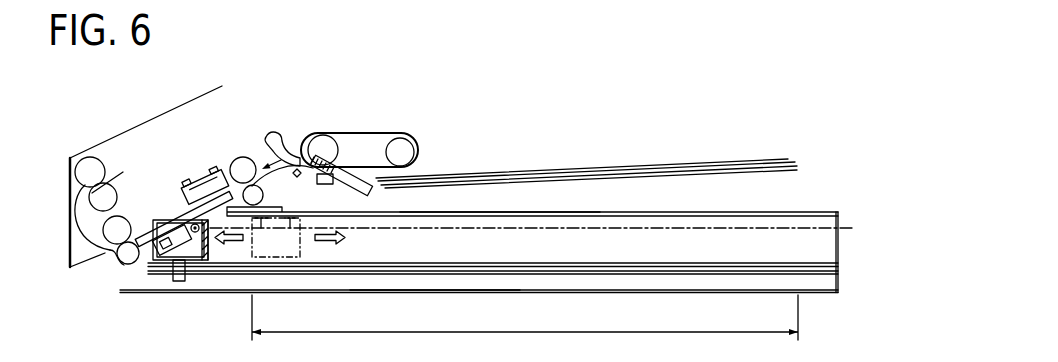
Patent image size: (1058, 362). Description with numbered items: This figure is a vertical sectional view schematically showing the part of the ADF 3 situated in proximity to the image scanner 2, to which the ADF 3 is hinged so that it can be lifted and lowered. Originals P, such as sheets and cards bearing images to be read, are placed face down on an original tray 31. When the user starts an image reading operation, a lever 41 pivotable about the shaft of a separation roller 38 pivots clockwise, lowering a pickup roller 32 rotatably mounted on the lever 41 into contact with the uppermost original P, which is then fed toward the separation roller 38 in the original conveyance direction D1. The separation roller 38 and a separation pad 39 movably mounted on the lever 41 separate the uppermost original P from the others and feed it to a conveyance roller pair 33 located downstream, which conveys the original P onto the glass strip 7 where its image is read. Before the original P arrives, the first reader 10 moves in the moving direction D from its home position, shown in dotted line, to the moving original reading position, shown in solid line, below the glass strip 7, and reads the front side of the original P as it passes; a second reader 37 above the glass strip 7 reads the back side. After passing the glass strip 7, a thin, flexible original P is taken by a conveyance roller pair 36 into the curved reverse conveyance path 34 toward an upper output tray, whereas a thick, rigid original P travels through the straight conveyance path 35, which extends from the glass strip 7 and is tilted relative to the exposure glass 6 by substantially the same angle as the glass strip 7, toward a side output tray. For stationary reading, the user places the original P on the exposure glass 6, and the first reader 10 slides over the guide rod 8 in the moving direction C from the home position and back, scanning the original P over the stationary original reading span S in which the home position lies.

The image scanner 2 is at (812, 195).
The ADF 3 is at (247, 92).
The exposure glass 6 is at (531, 211).
The glass strip 7 is at (165, 216).
The guide rod 8 is at (437, 274).
The first reader 10 is at (186, 281).
The original tray 31 is at (453, 181).
The pickup roller 32 is at (403, 142).
The conveyance roller pair 33 is at (264, 192).
The reverse conveyance path 34 is at (69, 173).
The straight conveyance path 35 is at (84, 267).
The conveyance roller pair 36 is at (124, 263).
The second reader 37 is at (198, 181).
The separation roller 38 is at (325, 143).
The separation pad 39 is at (347, 184).
The lever 41 is at (368, 137).
The original P is at (623, 171).
The original conveyance direction D1 is at (274, 160).
The moving direction D is at (229, 248).
The moving direction C is at (330, 248).
The stationary original reading span S is at (525, 317).